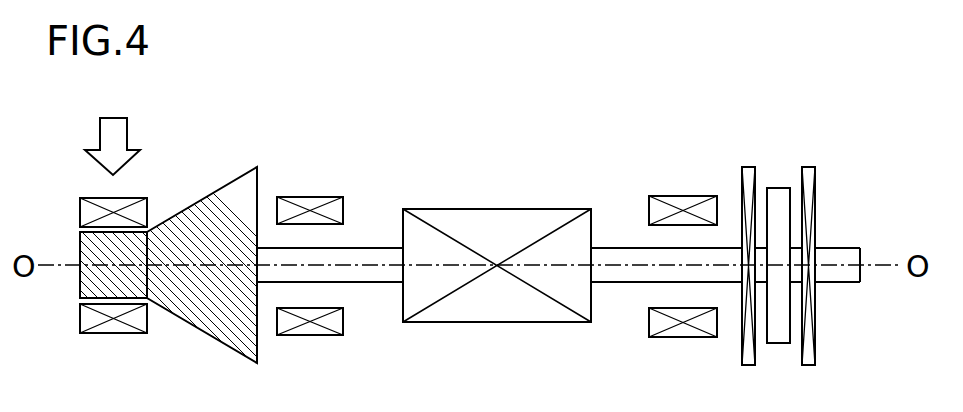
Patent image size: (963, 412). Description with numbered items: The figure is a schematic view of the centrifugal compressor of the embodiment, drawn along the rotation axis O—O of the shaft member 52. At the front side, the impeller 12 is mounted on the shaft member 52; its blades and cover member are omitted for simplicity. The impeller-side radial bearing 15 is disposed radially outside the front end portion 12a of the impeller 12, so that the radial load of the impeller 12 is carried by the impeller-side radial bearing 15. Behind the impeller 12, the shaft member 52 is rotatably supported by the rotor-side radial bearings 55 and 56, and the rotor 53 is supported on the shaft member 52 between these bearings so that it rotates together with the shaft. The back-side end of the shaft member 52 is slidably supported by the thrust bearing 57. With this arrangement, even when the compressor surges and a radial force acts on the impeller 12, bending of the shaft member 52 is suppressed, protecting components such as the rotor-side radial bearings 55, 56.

The impeller 12 is at (213, 192).
The front end portion 12a is at (92, 278).
The impeller-side radial bearing 15 is at (145, 198).
The shaft member 52 is at (622, 248).
The rotor 53 is at (503, 209).
The rotor-side radial bearing 55 is at (315, 197).
The rotor-side radial bearing 56 is at (683, 196).
The thrust bearing 57 is at (820, 163).